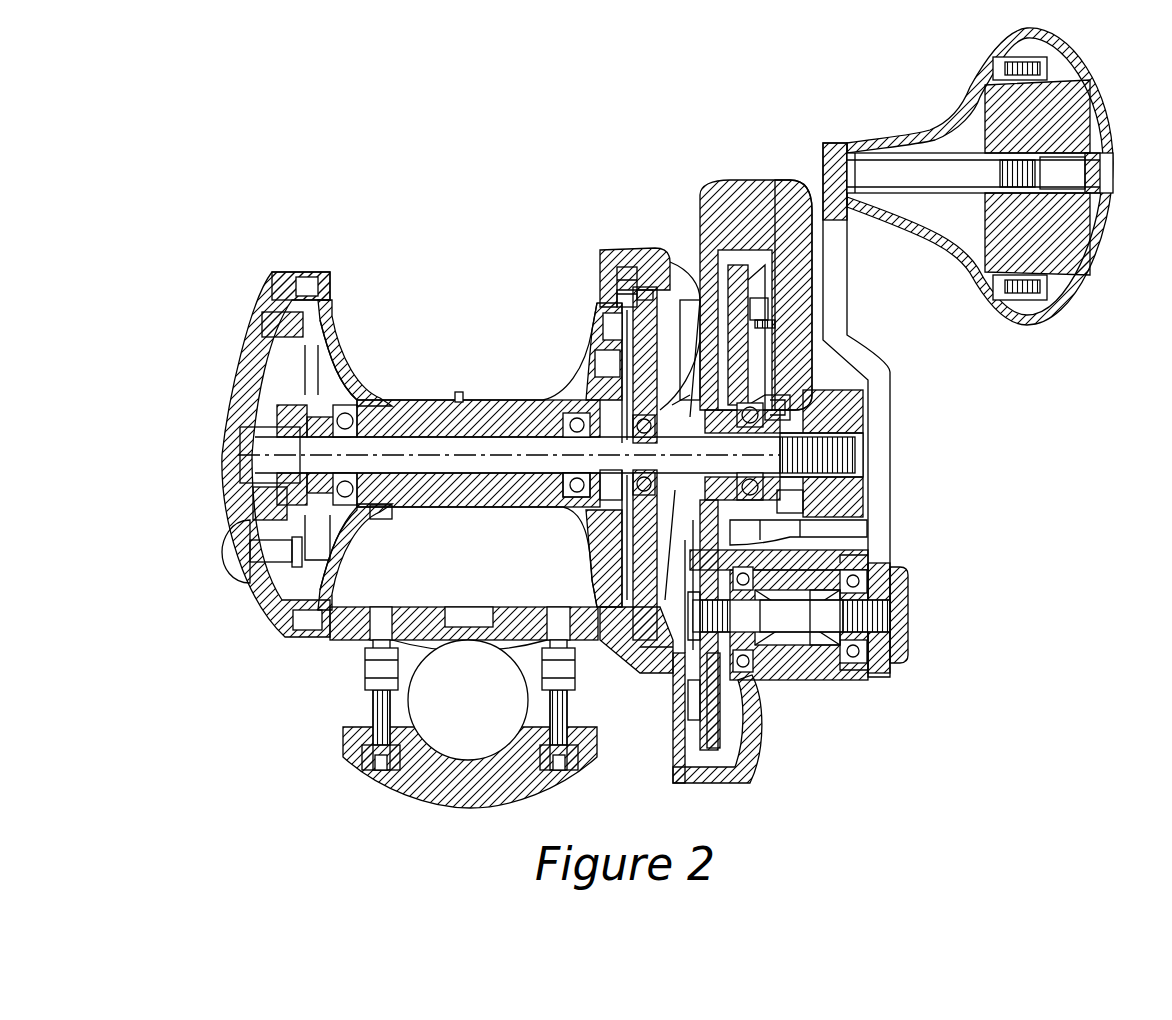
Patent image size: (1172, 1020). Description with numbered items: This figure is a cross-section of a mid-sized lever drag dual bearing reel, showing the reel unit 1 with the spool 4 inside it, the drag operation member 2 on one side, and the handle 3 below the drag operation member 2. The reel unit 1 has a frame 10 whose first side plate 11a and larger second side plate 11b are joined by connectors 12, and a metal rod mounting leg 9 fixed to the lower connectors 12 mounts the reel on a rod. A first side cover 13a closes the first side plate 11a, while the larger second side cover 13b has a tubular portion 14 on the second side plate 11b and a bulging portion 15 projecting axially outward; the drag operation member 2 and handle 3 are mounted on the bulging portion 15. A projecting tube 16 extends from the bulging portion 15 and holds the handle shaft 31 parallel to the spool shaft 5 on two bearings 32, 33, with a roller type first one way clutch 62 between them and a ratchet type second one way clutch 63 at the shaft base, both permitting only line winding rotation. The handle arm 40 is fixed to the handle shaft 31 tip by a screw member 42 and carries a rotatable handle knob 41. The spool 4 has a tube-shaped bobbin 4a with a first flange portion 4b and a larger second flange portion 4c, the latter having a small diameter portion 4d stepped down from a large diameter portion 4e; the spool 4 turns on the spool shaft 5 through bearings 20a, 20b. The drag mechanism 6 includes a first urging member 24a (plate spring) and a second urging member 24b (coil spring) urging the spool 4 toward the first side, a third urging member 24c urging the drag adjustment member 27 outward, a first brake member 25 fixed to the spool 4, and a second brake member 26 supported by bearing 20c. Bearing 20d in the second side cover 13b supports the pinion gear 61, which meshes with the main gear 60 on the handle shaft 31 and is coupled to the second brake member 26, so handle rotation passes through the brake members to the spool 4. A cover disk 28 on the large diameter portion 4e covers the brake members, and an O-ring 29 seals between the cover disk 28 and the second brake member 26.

The reel unit 1 is at (652, 215).
The drag operation member 2 is at (760, 170).
The handle 3 is at (897, 120).
The spool 4 is at (455, 333).
The bobbin 4a is at (442, 400).
The first flange portion 4b is at (336, 340).
The second flange portion 4c is at (638, 383).
The small diameter portion 4d is at (606, 305).
The large diameter portion 4e is at (642, 288).
The spool shaft 5 is at (853, 458).
The drag mechanism 6 is at (770, 190).
The rod mounting leg 9 is at (566, 712).
The frame 10 is at (357, 238).
The first side plate 11a is at (312, 272).
The second side plate 11b is at (605, 262).
The connectors 12 is at (337, 648).
The first side cover 13a is at (270, 272).
The second side cover 13b is at (676, 295).
The tubular portion 14 is at (681, 335).
The bulging portion 15 is at (727, 783).
The projecting tube 16 is at (823, 680).
The bearing 20a is at (387, 513).
The bearing 20b is at (600, 490).
The bearing 20c is at (610, 570).
The bearing 20d is at (765, 528).
The first urging member 24a is at (300, 410).
The second urging member 24b is at (560, 473).
The third urging member 24c is at (860, 497).
The first brake member 25 is at (612, 300).
The second brake member 26 is at (630, 330).
The drag adjustment member 27 is at (857, 400).
The cover disk 28 is at (692, 366).
The O-ring 29 is at (767, 380).
The handle shaft 31 is at (797, 620).
The bearing 32 is at (743, 683).
The bearing 33 is at (857, 677).
The handle arm 40 is at (847, 290).
The handle knob 41 is at (1098, 95).
The screw member 42 is at (908, 600).
The main gear 60 is at (743, 747).
The pinion gear 61 is at (765, 405).
The first one way clutch 62 is at (827, 657).
The second one way clutch 63 is at (697, 700).